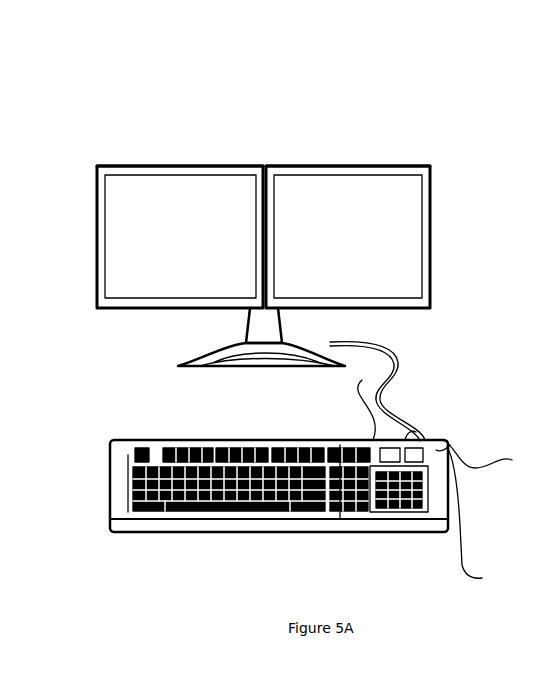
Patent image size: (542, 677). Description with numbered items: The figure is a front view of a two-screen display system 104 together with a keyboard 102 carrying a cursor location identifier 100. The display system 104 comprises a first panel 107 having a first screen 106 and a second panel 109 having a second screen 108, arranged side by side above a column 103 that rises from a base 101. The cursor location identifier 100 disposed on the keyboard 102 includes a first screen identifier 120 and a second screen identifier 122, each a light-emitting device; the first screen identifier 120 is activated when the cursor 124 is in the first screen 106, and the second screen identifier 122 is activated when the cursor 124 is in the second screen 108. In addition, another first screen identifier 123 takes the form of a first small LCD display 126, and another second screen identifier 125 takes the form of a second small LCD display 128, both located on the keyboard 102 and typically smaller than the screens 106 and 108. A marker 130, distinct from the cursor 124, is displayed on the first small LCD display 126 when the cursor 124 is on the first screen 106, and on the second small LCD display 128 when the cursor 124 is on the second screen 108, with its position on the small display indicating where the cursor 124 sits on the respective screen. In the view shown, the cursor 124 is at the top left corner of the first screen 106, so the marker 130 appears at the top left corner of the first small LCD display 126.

The cursor location identifier 100 is at (400, 440).
The base 101 is at (180, 365).
The keyboard 102 is at (279, 500).
The column 103 is at (246, 329).
The two-screen display system 104 is at (282, 156).
The first screen 106 is at (282, 190).
The first panel 107 is at (222, 166).
The second screen 108 is at (357, 192).
The second panel 109 is at (256, 131).
The first screen identifier 120 is at (405, 440).
The second screen identifier 122 is at (450, 445).
The another first screen identifier 123 is at (363, 402).
The cursor 124 is at (115, 191).
The another second screen identifier 125 is at (490, 454).
The first small LCD display 126 is at (340, 522).
The second small LCD display 128 is at (478, 517).
The marker 130 is at (345, 458).